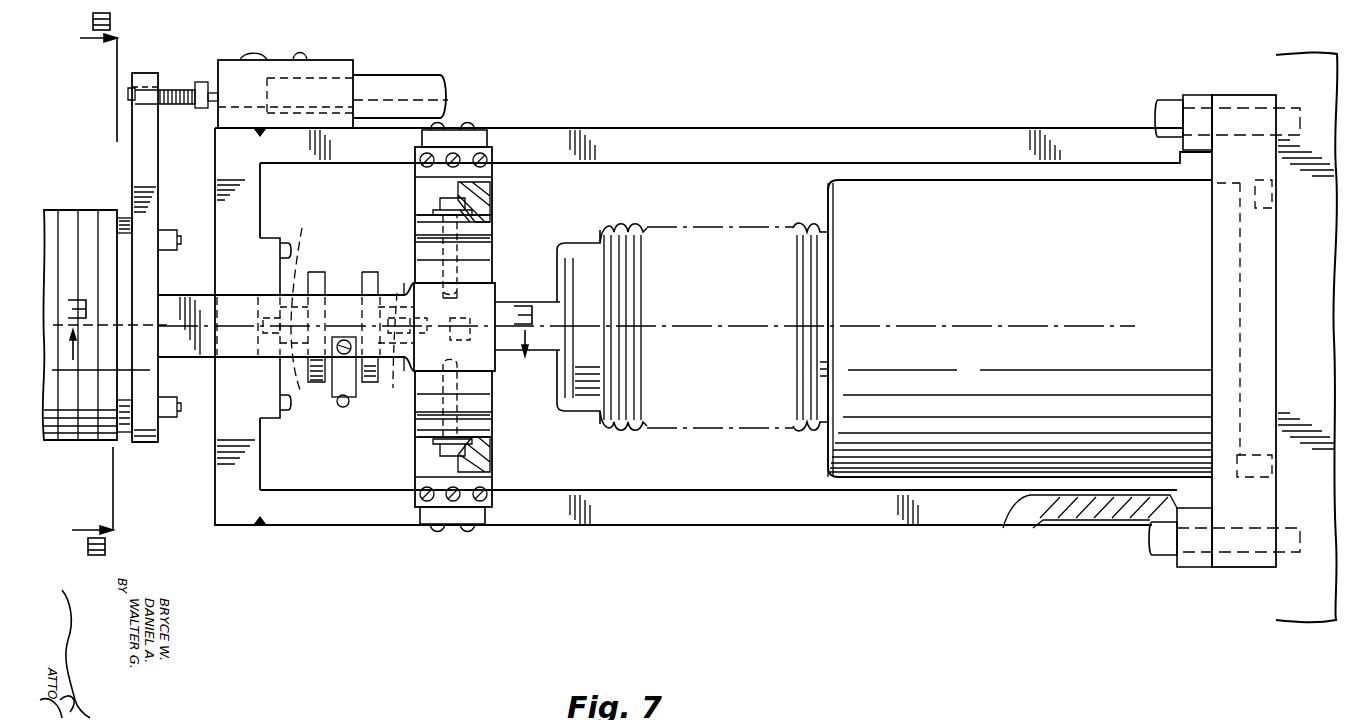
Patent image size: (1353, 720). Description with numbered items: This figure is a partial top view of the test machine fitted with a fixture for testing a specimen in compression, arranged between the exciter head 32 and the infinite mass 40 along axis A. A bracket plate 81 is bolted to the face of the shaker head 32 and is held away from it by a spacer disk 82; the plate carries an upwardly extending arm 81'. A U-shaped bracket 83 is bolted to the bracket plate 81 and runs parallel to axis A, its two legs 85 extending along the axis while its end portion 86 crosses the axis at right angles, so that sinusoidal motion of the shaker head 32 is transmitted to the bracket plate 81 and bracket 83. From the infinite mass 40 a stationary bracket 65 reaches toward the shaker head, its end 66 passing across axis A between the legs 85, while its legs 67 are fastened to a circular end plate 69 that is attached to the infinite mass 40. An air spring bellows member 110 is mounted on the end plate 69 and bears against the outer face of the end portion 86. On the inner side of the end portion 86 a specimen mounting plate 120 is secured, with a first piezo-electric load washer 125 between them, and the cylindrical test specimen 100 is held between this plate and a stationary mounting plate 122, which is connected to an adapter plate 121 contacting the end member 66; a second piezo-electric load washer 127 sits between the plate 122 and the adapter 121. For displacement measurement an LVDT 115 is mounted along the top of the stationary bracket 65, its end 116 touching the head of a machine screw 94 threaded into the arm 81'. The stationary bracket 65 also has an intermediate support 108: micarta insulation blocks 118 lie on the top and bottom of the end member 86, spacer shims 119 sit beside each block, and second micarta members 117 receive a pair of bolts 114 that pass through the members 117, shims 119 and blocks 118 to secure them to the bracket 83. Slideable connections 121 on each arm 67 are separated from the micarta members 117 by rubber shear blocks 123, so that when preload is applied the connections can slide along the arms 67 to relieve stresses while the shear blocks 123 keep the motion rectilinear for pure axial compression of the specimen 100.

The exciter head 32 is at (79, 206).
The infinite mass 40 is at (1272, 80).
The stationary bracket 65 is at (640, 128).
The end member of stationary bracket 66 is at (226, 164).
The legs of stationary bracket 67 is at (787, 130).
The circular end plate 69 is at (1237, 98).
The bracket plate 81 is at (154, 459).
The upwardly extending arm 81' is at (124, 257).
The spacer disk 82 is at (127, 430).
The U-shaped bracket 83 is at (408, 273).
The legs of U-shaped bracket 85 is at (201, 298).
The end portion of U-shaped bracket 86 is at (497, 292).
The machine screw 94 is at (172, 86).
The cylindrical test specimen 100 is at (357, 365).
The intermediate support 108 is at (495, 225).
The air spring bellows member 110 is at (833, 195).
The bolts 114 is at (440, 200).
The LVDT 115 is at (395, 80).
The end of LVDT 116 is at (213, 92).
The second micarta insulation members 117 is at (427, 218).
The micarta insulation block 118 is at (480, 258).
The spacer shims 119 is at (418, 240).
The specimen mounting plate 120 is at (367, 273).
The adapter plate / slideable connection 121 is at (472, 145).
The stationary mounting plate 122 is at (315, 380).
The rubber shear block 123 is at (493, 188).
The first piezo-electric load washer 125 is at (392, 366).
The second piezo-electric load washer 127 is at (300, 250).
The axis A is at (973, 328).